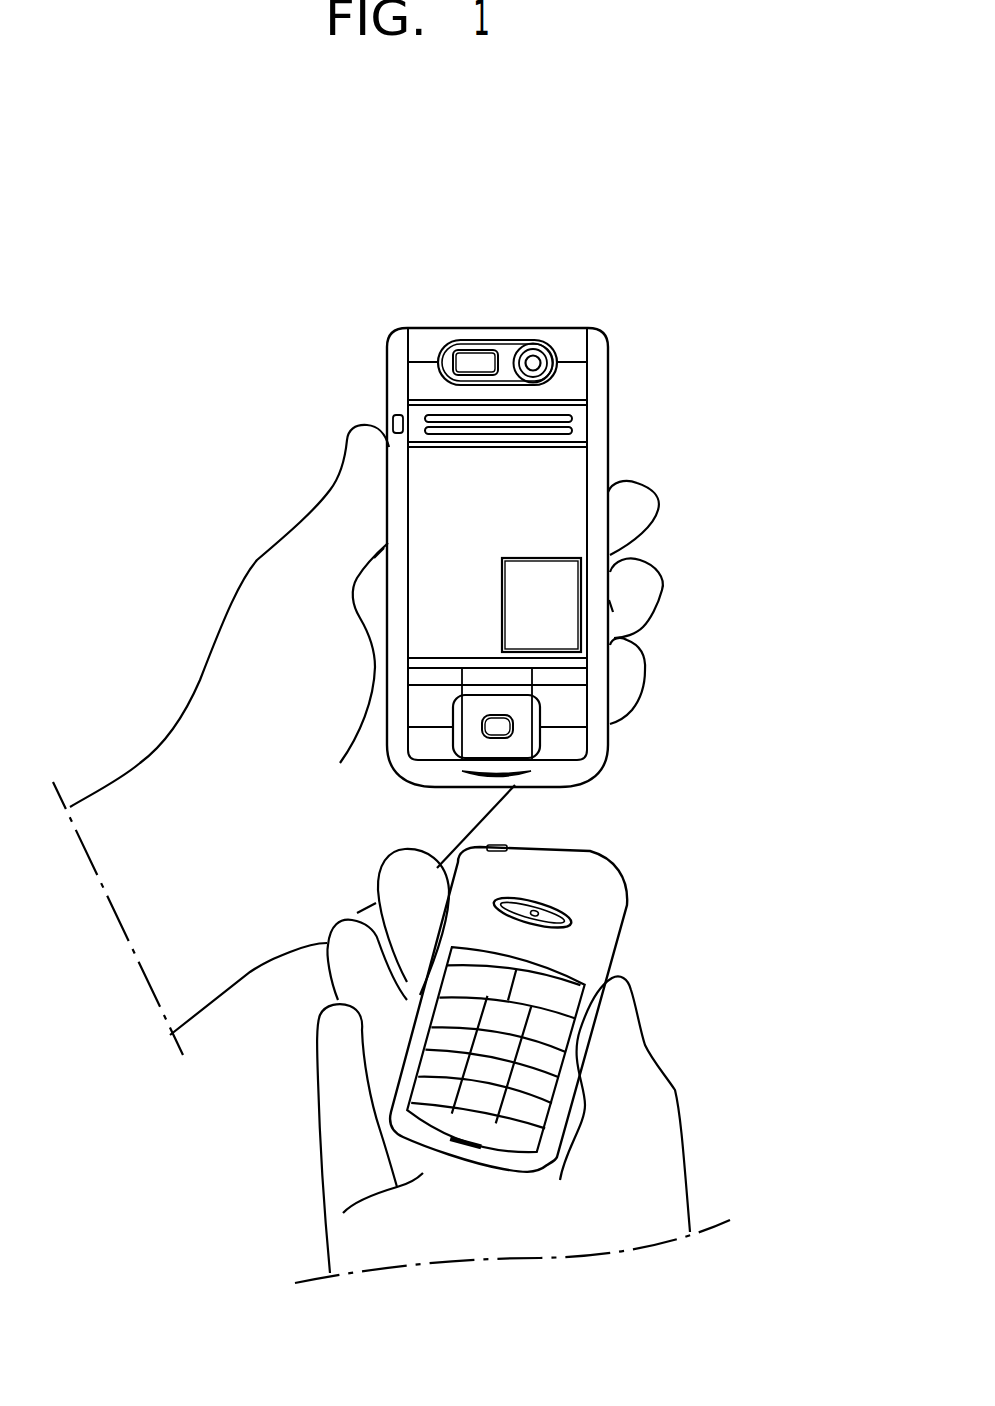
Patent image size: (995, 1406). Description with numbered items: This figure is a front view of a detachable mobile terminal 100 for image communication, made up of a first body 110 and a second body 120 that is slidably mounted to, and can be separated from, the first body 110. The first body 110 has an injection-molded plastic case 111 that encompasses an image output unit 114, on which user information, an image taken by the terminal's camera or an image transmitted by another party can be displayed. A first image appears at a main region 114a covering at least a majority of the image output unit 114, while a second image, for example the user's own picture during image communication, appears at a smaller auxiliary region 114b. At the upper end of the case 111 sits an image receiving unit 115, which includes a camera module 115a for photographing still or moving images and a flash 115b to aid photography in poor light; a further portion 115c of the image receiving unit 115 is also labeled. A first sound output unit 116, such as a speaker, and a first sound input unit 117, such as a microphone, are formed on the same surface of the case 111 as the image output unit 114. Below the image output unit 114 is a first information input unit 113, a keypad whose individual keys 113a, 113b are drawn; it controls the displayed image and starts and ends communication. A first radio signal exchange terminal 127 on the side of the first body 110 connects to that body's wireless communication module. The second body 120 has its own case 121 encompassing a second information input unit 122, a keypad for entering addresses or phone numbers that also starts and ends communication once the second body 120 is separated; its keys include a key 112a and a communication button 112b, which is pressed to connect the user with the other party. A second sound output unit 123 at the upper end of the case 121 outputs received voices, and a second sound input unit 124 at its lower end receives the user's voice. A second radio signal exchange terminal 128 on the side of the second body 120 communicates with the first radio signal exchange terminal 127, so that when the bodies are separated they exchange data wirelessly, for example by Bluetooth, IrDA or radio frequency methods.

The mobile terminal 100 is at (785, 380).
The first body 110 is at (443, 317).
The case 111 is at (598, 453).
The end key 112a is at (440, 1030).
The communication button 112b is at (455, 973).
The first information input unit 113 is at (590, 703).
The call key 113a is at (408, 737).
The end key 113b is at (568, 753).
The image output unit 114 is at (759, 517).
The main region 114a is at (567, 515).
The auxiliary region 114b is at (563, 602).
The image receiving unit 115 is at (463, 330).
The camera module 115a is at (485, 357).
The flash 115b is at (532, 340).
The camera window 115c is at (575, 342).
The first sound output unit 116 is at (537, 417).
The first sound input unit 117 is at (508, 782).
The second body 120 is at (617, 868).
The case 121 is at (590, 950).
The second information input unit 122 is at (572, 1042).
The second sound output unit 123 is at (547, 907).
The second sound input unit 124 is at (470, 1147).
The first radio signal exchange terminal 127 is at (389, 413).
The second radio signal exchange terminal 128 is at (497, 850).